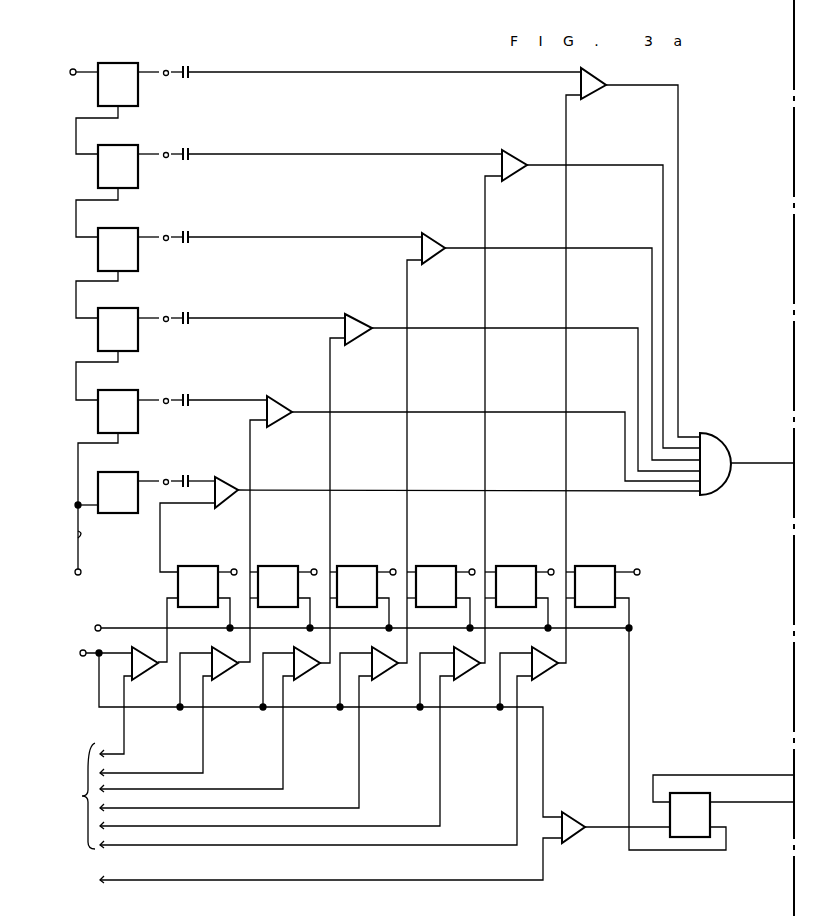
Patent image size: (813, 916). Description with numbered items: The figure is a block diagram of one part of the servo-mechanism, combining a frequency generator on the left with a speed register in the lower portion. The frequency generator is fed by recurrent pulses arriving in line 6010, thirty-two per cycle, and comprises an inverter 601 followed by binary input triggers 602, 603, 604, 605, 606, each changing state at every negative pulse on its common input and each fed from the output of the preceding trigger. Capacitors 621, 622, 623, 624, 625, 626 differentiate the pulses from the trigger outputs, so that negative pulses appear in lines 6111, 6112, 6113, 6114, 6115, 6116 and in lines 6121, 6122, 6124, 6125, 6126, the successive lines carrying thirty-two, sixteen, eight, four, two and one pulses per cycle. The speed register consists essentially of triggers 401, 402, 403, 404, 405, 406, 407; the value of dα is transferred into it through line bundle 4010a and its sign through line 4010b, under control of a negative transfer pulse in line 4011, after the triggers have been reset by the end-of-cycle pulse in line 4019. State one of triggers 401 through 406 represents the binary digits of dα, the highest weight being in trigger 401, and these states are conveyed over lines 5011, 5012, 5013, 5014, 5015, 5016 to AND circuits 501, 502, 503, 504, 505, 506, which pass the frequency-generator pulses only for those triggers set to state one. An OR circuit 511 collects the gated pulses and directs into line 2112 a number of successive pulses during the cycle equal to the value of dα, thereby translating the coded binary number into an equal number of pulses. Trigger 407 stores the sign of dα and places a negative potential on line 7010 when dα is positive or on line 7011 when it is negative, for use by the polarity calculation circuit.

The binary input trigger 606 is at (99, 98).
The binary input trigger 605 is at (98, 179).
The binary input trigger 604 is at (98, 262).
The binary input trigger 603 is at (98, 344).
The binary input trigger 602 is at (98, 421).
The inverter 601 is at (98, 492).
The pulse input line 6010 is at (76, 535).
The output line 6116 is at (164, 70).
The output line 6115 is at (164, 152).
The output line 6114 is at (164, 235).
The output line 6113 is at (164, 316).
The output line 6112 is at (164, 398).
The output line 6111 is at (164, 479).
The differentiating capacitor 626 is at (190, 67).
The differentiating capacitor 625 is at (190, 149).
The differentiating capacitor 624 is at (190, 232).
The differentiating capacitor 623 is at (190, 313).
The differentiating capacitor 622 is at (189, 397).
The differentiating capacitor 621 is at (190, 476).
The pulse line 6126 is at (386, 75).
The pulse line 6125 is at (368, 158).
The pulse line 6124 is at (330, 240).
The pulse line 6122 is at (262, 400).
The pulse line 6121 is at (208, 478).
The AND circuit 506 is at (596, 80).
The AND circuit 505 is at (512, 158).
The AND circuit 504 is at (432, 246).
The AND circuit 503 is at (355, 323).
The AND circuit 502 is at (277, 407).
The AND circuit 501 is at (232, 490).
The trigger output line 5011 is at (160, 531).
The trigger output line 5012 is at (252, 517).
The trigger output line 5013 is at (332, 517).
The trigger output line 5014 is at (409, 517).
The trigger output line 5015 is at (488, 517).
The trigger output line 5016 is at (568, 519).
The OR circuit 511 is at (719, 447).
The output line 2112 is at (782, 462).
The speed register trigger 401 is at (206, 566).
The speed register trigger 402 is at (298, 566).
The speed register trigger 403 is at (376, 566).
The speed register trigger 404 is at (430, 567).
The speed register trigger 405 is at (508, 567).
The speed register trigger 406 is at (590, 567).
The sign trigger 407 is at (712, 815).
The reset line 4019 is at (340, 630).
The transfer pulse line 4011 is at (301, 732).
The line bundle 4010a is at (269, 769).
The sign line 4010b is at (195, 880).
The negative sign line 7011 is at (712, 776).
The positive sign line 7010 is at (778, 804).